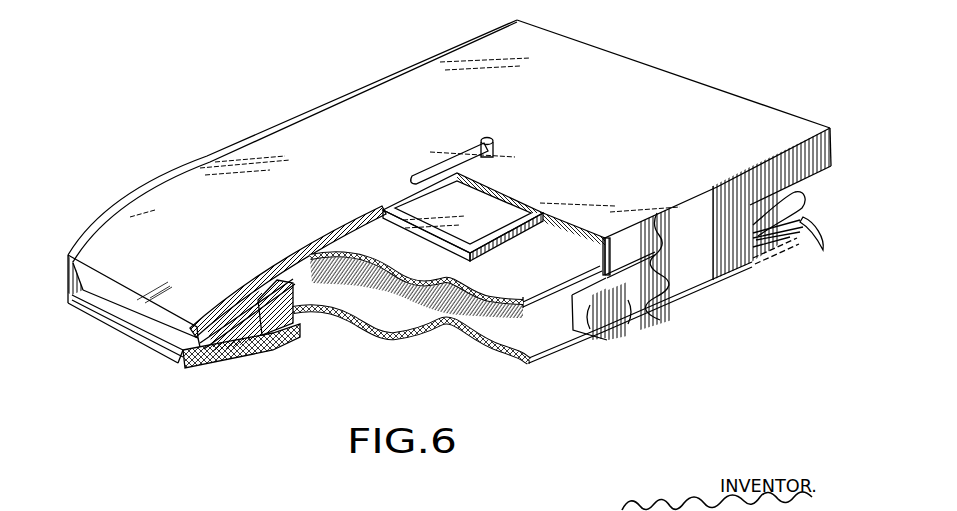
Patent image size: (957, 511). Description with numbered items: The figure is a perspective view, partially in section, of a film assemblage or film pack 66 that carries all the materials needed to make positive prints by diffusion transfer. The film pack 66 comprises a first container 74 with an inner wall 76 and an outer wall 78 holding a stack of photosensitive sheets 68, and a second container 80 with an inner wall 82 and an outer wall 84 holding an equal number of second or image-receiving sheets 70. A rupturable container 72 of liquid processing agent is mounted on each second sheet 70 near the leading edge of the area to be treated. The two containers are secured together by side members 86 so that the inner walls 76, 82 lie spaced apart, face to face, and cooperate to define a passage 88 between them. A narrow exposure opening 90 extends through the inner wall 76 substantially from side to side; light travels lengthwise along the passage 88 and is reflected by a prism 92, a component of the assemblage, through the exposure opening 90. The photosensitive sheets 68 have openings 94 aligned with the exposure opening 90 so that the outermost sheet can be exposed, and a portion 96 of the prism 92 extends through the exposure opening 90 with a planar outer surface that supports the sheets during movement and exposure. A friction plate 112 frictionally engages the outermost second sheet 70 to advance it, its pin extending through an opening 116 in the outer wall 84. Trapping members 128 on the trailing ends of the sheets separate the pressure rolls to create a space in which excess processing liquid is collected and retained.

The film pack 66 is at (735, 40).
The outer wall 84 is at (737, 110).
The second container 80 is at (362, 118).
The opening 116 is at (448, 168).
The friction plate 112 is at (543, 214).
The inner wall 82 is at (311, 262).
The second sheet 70 is at (541, 266).
The photosensitive sheet 68 is at (550, 340).
The prism 92 is at (335, 314).
The exposure opening 90 is at (293, 323).
The openings 94 is at (270, 338).
The portion of prism 96 is at (277, 341).
The outer wall 78 is at (213, 370).
The rupturable container 72 is at (227, 333).
The side members 86 is at (692, 285).
The trapping members 128 is at (803, 227).
The passage 88 is at (597, 300).
The first container 74 is at (623, 322).
The inner wall 76 is at (633, 323).